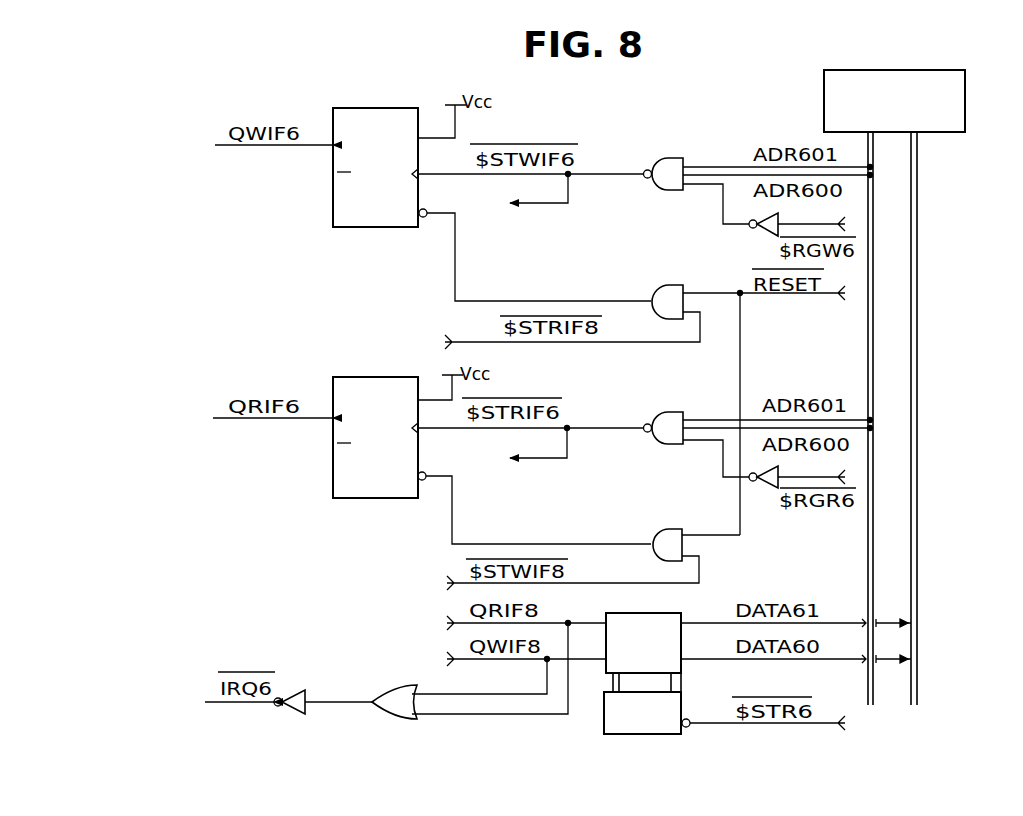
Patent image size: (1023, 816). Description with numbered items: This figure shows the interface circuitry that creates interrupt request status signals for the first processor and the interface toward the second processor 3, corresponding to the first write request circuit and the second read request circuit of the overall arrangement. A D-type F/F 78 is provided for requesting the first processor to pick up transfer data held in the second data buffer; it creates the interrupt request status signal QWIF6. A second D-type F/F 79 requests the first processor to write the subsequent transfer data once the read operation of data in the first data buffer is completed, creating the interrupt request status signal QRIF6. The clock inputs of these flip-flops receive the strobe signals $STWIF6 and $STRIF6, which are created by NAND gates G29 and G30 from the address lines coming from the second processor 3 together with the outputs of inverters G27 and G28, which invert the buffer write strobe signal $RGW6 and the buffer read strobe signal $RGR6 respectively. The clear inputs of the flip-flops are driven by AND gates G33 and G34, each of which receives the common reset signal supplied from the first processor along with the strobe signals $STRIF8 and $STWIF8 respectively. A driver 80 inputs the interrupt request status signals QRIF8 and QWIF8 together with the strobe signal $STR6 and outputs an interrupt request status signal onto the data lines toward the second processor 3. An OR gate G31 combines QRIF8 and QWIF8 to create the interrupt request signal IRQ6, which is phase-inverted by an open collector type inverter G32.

The second processor 3 is at (965, 100).
The D-type F/F 78 is at (333, 208).
The D-type F/F 79 is at (333, 487).
The driver 80 is at (604, 720).
The inverter G27 is at (762, 238).
The inverter G28 is at (766, 492).
The NAND gate G29 is at (670, 158).
The NAND gate G30 is at (666, 444).
The OR gate G31 is at (401, 719).
The inverter G32 is at (290, 714).
The AND gate G33 is at (661, 284).
The AND gate G34 is at (656, 530).